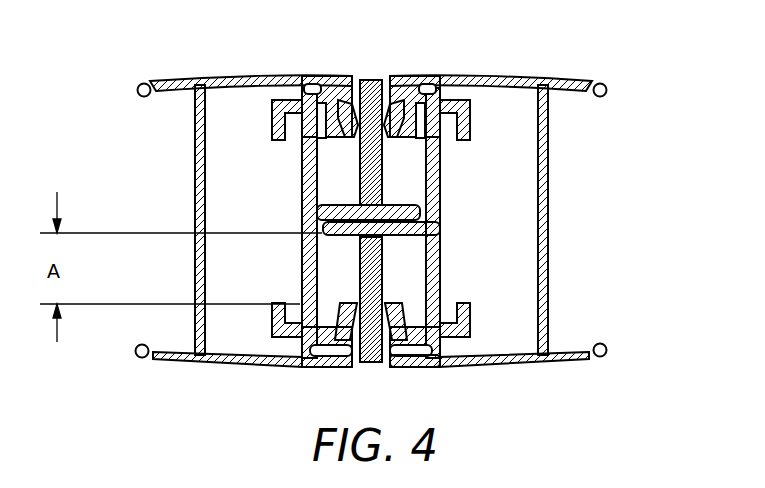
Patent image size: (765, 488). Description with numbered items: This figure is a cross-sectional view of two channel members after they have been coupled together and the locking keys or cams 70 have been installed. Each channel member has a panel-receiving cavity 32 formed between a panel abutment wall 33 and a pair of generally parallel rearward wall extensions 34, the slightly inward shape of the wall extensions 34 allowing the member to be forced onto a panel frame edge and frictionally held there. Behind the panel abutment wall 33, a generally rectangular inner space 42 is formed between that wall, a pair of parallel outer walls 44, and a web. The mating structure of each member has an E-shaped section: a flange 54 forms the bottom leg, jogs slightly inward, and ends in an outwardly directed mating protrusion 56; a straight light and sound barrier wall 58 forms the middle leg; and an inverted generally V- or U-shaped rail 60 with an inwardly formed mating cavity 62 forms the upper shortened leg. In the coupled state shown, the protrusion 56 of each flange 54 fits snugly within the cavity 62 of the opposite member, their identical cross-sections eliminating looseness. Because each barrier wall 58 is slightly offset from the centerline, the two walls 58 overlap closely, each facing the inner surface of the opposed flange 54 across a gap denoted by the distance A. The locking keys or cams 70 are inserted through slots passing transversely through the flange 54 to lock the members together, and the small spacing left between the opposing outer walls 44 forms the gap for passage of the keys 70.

The panel-receiving cavity 32 is at (605, 263).
The panel abutment wall 33 is at (548, 260).
The rearward wall extensions 34 is at (587, 95).
The inner space 42 is at (517, 215).
The outer walls 44 is at (490, 73).
The flange 54 is at (345, 105).
The mating protrusion 56 is at (420, 322).
The light and sound barrier wall 58 is at (413, 203).
The rail 60 is at (332, 82).
The mating cavity 62 is at (433, 293).
The locking keys or cams 70 is at (372, 78).